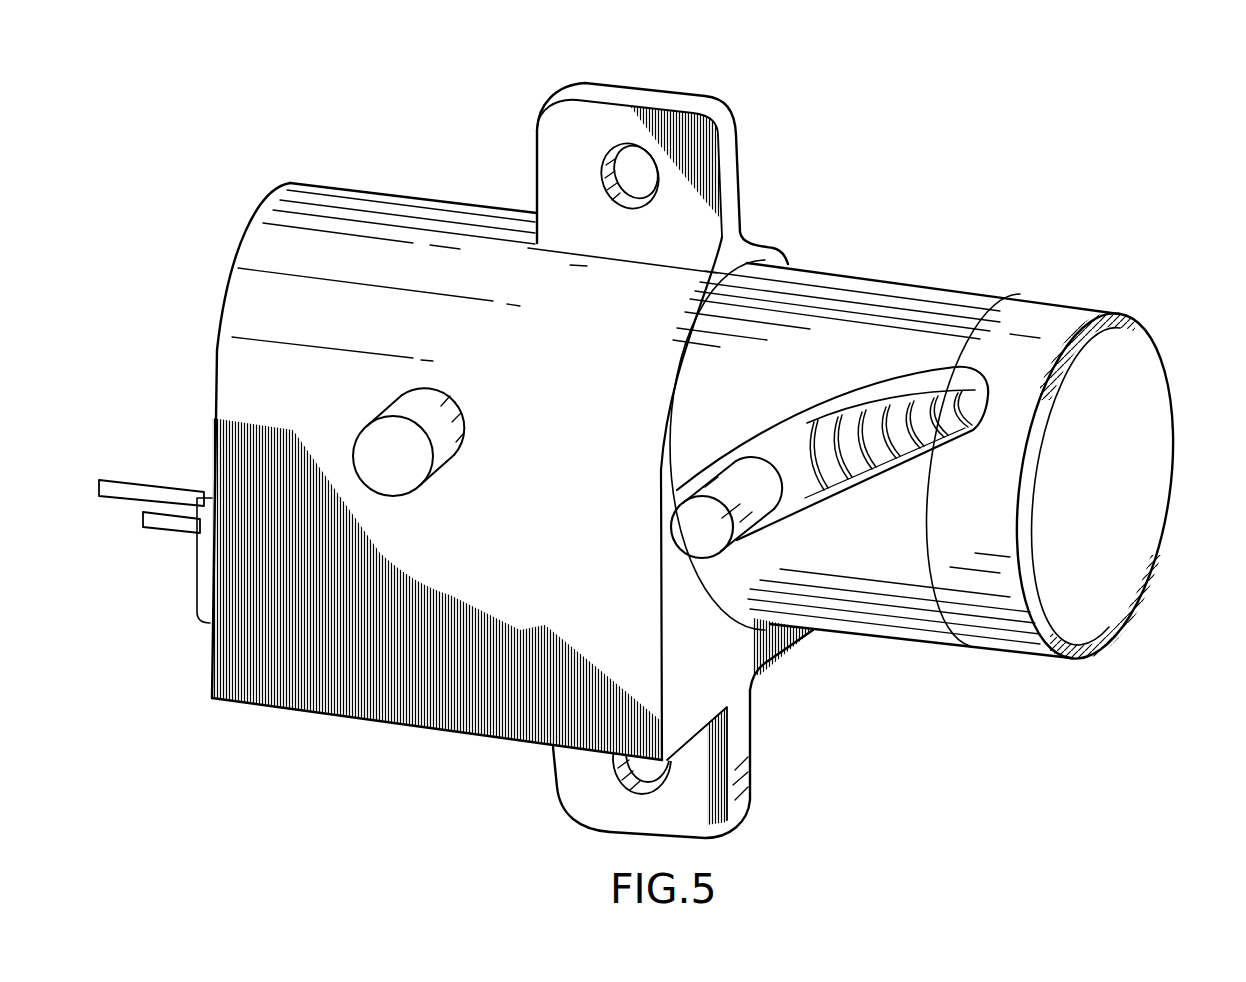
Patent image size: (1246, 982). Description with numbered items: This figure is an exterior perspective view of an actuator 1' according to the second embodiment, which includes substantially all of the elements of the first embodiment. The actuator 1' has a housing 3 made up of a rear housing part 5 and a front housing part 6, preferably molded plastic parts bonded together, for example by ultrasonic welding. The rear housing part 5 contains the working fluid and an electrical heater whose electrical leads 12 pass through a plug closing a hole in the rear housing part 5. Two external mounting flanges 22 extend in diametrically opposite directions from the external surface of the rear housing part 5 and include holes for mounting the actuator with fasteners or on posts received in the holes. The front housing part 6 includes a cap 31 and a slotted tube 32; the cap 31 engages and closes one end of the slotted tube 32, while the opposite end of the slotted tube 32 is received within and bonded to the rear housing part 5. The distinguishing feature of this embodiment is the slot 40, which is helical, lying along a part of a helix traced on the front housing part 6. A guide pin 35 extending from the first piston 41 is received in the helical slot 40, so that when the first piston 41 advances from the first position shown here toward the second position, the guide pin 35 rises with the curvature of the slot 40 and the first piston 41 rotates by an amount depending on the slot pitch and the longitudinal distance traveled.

The actuator 1' is at (658, 436).
The housing 3 is at (502, 193).
The rear housing part 5 is at (323, 190).
The front housing part 6 is at (883, 277).
The electrical leads 12 is at (127, 480).
The external mounting flanges 22 is at (634, 116).
The cap 31 is at (1143, 408).
The slotted tube 32 is at (933, 313).
The guide pin 35 is at (715, 538).
The helical slot 40 is at (860, 393).
The first piston 41 is at (792, 480).